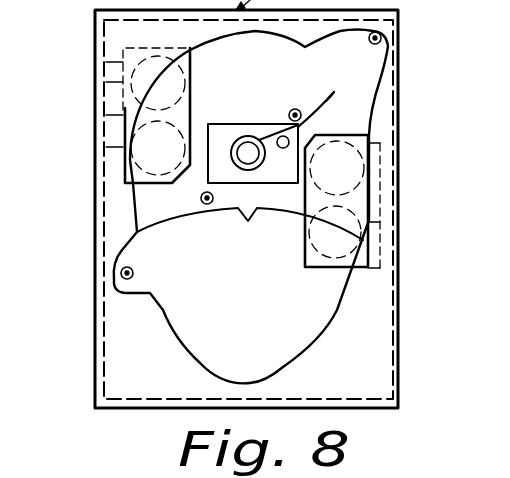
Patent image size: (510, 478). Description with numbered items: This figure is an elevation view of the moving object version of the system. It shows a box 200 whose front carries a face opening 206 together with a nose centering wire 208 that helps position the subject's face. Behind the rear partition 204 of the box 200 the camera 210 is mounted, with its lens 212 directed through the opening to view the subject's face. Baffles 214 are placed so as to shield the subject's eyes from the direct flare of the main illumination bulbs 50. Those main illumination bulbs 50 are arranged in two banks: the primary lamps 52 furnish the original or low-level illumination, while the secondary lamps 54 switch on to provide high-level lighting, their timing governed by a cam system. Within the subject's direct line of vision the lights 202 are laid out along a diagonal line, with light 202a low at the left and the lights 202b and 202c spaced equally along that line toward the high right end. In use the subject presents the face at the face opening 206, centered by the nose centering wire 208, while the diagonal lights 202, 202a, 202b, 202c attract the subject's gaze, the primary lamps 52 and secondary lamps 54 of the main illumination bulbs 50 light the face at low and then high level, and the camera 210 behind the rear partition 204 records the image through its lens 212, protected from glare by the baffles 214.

The main illumination bulbs 50 is at (112, 120).
The primary lamps 52 is at (104, 82).
The secondary lamps 54 is at (100, 158).
The box 200 is at (94, 238).
The lights 202 is at (253, 140).
The light 202a is at (134, 272).
The light 202b is at (175, 204).
The light 202c is at (288, 115).
The rear partition 204 is at (268, 318).
The face opening 206 is at (196, 352).
The nose centering wire 208 is at (237, 212).
The camera 210 is at (347, 103).
The lens 212 is at (339, 79).
The baffles 214 is at (195, 88).